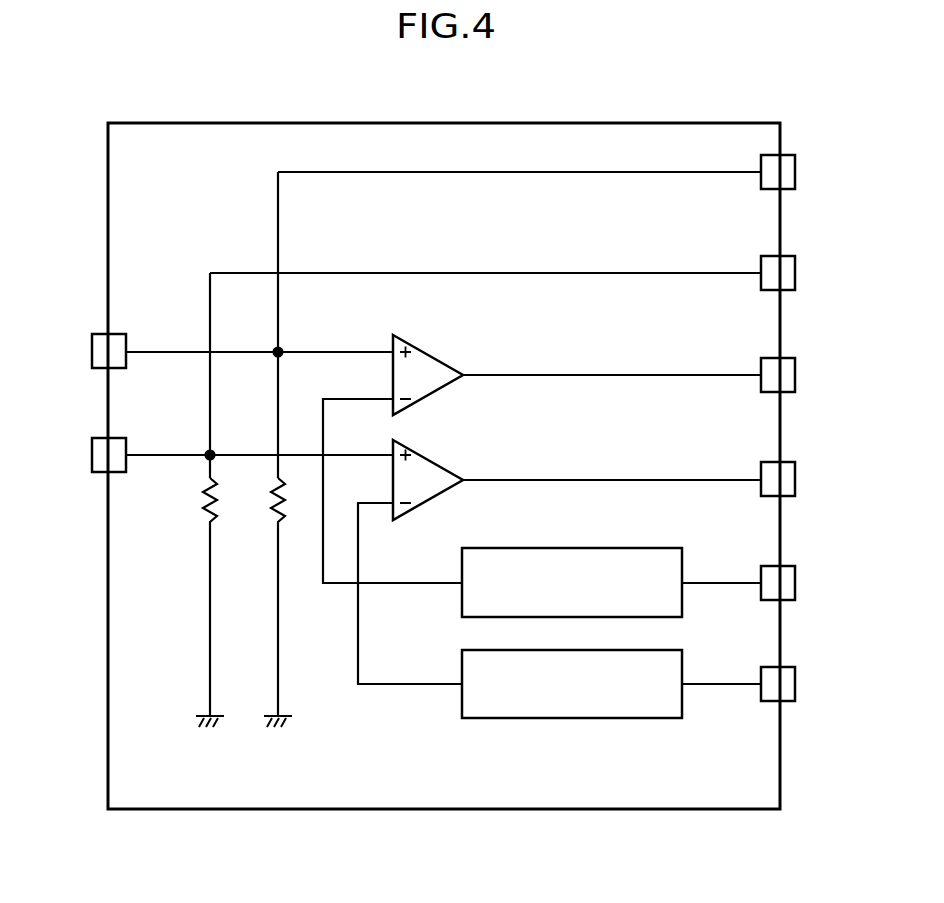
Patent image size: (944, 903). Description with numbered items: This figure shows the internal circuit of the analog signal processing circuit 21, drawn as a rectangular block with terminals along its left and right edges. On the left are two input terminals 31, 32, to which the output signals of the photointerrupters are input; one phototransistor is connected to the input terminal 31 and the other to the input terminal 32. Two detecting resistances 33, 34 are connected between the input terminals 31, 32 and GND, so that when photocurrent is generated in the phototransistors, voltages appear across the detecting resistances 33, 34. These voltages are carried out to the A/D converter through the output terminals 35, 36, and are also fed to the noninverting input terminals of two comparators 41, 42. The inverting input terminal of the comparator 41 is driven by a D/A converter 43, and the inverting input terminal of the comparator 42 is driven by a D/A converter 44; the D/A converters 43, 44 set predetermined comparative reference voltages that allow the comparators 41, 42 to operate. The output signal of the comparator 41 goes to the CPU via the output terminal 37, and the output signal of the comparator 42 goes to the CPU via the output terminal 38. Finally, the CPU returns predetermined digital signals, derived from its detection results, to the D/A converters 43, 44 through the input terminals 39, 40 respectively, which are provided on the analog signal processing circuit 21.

The analog signal processing circuit 21 is at (493, 809).
The input terminal 31 is at (90, 352).
The input terminal 32 is at (90, 455).
The detecting resistance 33 is at (199, 490).
The detecting resistance 34 is at (267, 490).
The output terminal 35 is at (799, 172).
The output terminal 36 is at (799, 273).
The output terminal 37 is at (799, 375).
The output terminal 38 is at (799, 479).
The input terminal 39 is at (799, 583).
The input terminal 40 is at (799, 684).
The comparator 41 is at (438, 386).
The comparator 42 is at (440, 491).
The D/A converter 43 is at (568, 548).
The D/A converter 44 is at (566, 718).